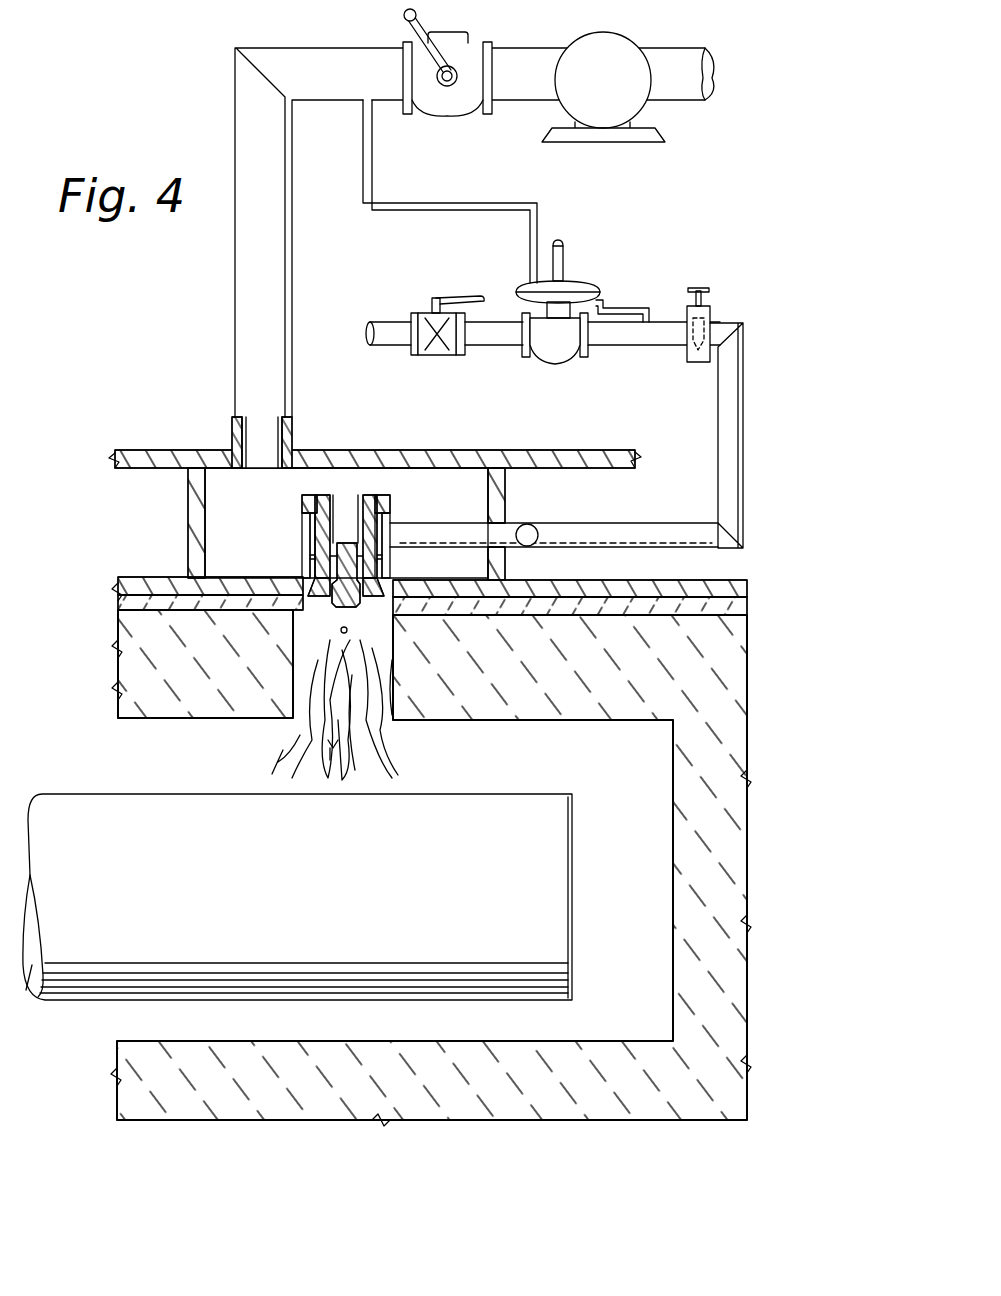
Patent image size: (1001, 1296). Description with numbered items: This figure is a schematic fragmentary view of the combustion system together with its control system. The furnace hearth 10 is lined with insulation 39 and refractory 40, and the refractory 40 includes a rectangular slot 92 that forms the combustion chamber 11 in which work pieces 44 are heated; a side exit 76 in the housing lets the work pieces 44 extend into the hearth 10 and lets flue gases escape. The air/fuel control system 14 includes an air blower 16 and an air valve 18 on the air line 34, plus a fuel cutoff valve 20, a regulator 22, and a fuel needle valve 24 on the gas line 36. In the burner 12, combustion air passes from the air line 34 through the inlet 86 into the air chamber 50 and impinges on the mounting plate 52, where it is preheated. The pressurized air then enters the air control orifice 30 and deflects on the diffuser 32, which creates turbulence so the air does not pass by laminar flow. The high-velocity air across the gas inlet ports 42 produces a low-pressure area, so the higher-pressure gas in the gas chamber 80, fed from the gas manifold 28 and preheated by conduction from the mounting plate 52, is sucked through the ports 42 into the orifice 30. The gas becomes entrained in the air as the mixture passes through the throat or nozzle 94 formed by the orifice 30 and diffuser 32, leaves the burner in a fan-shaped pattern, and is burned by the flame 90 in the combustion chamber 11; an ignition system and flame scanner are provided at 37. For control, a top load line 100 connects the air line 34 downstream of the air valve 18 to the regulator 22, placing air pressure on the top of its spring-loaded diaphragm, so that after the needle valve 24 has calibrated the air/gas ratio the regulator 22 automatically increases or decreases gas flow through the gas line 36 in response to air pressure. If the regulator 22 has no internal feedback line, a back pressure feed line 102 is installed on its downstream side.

The furnace hearth 10 is at (409, 833).
The combustion chamber 11 is at (388, 725).
The burner 12 is at (375, 498).
The air/fuel control system 14 is at (549, 376).
The air blower 16 is at (615, 88).
The air valve 18 is at (448, 110).
The fuel cutoff valve 20 is at (437, 358).
The regulator 22 is at (556, 362).
The fuel needle valve 24 is at (692, 366).
The gas manifold 28 is at (308, 517).
The air control orifice 30 is at (323, 538).
The diffuser 32 is at (347, 495).
The air line 34 is at (235, 268).
The gas line 36 is at (735, 441).
The ignition system and flame scanner 37 is at (348, 627).
The insulation 39 is at (747, 611).
The refractory 40 is at (552, 707).
The gas inlet ports 42 is at (376, 558).
The work pieces 44 is at (440, 882).
The air chamber 50 is at (346, 523).
The mounting plate 52 is at (232, 577).
The side exit 76 is at (197, 747).
The gas chamber 80 is at (383, 530).
The inlet 86 is at (293, 442).
The flame 90 is at (307, 728).
The rectangular slot 92 is at (328, 766).
The throat or nozzle 94 is at (328, 600).
The top load line 100 is at (403, 200).
The back pressure feed line 102 is at (623, 305).